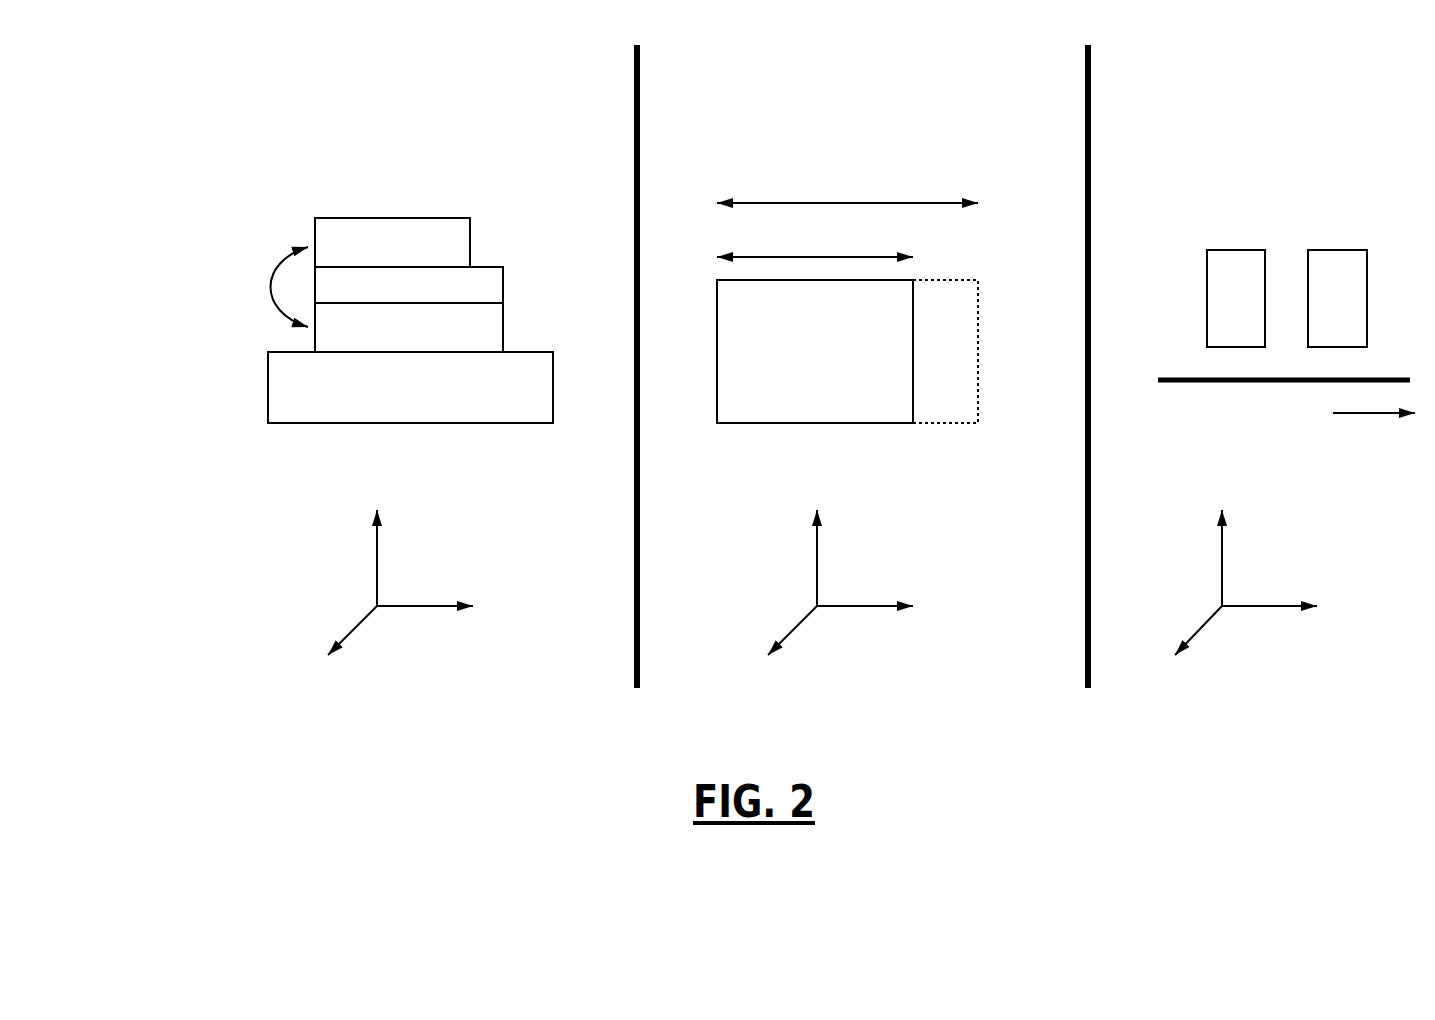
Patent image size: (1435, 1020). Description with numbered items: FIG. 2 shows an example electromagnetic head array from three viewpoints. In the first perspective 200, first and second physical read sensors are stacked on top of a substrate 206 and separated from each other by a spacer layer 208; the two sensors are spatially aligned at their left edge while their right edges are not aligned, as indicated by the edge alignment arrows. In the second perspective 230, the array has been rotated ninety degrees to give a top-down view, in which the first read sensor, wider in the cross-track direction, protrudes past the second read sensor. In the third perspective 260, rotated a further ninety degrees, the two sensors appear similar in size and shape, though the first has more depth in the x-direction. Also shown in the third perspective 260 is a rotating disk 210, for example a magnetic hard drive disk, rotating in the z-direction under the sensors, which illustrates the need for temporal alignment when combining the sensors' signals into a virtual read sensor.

The first perspective 200 is at (310, 105).
The substrate 206 is at (543, 413).
The spacer layer 208 is at (503, 279).
The rotating disk 210 is at (1290, 425).
The second perspective 230 is at (763, 102).
The third perspective 260 is at (1210, 103).